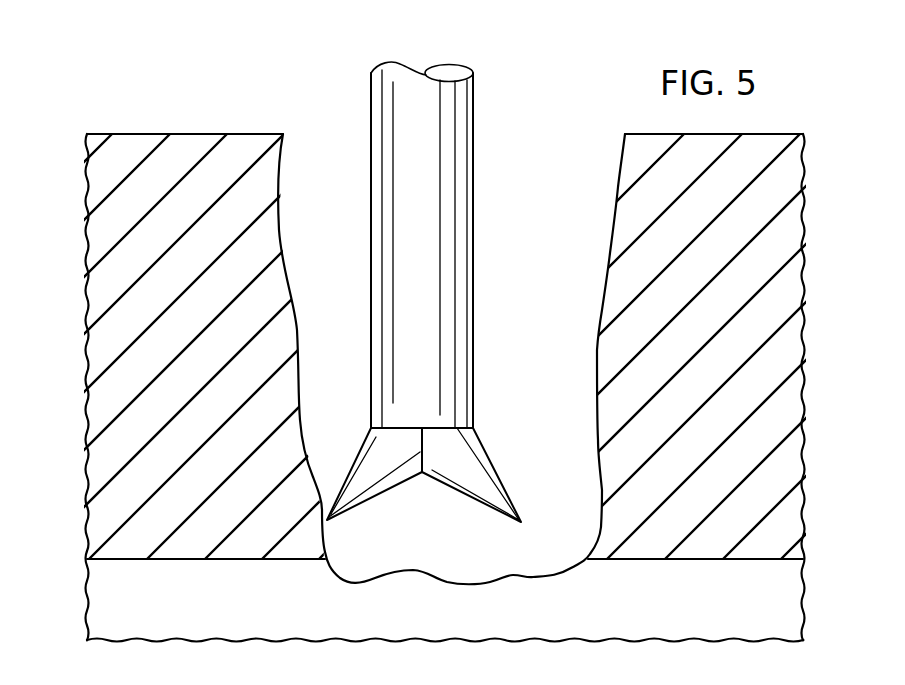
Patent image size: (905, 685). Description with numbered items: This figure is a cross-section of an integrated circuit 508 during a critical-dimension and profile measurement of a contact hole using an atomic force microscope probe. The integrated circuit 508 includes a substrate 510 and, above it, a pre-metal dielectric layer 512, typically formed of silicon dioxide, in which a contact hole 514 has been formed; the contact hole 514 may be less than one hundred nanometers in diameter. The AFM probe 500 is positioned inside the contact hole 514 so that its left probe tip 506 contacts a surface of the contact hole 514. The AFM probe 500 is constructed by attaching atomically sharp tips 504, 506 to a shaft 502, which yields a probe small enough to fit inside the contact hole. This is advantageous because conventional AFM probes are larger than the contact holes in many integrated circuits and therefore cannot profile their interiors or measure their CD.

The AFM probe 500 is at (346, 111).
The shaft 502 is at (474, 128).
The probe tip 504 is at (473, 500).
The left probe tip 506 is at (377, 498).
The integrated circuit 508 is at (195, 74).
The substrate 510 is at (86, 605).
The pre-metal dielectric layer 512 is at (86, 310).
The contact hole 514 is at (538, 213).